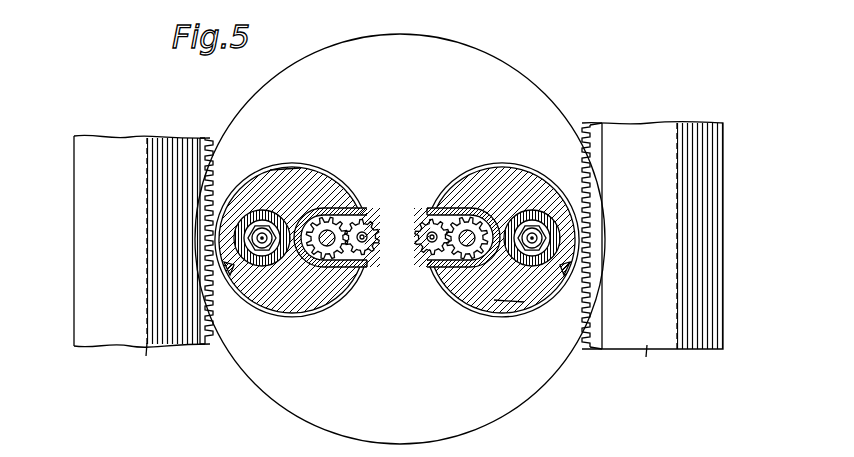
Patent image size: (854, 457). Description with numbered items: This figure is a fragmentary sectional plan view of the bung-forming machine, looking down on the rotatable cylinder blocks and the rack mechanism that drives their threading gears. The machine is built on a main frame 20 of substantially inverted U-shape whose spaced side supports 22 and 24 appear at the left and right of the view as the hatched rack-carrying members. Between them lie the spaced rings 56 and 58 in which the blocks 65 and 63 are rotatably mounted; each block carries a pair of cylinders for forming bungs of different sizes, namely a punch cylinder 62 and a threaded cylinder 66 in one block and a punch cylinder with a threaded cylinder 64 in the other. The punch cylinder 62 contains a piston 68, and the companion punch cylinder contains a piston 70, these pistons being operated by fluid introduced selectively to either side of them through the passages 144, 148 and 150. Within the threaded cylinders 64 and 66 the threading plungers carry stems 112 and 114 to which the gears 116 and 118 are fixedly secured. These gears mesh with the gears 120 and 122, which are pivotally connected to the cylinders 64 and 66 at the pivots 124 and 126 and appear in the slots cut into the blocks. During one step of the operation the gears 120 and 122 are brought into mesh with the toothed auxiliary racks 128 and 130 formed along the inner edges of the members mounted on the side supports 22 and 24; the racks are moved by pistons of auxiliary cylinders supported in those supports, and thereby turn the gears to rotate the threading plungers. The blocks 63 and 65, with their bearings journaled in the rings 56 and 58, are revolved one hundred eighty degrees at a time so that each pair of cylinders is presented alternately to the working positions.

The main frame 20 is at (126, 228).
The side support 22 is at (652, 252).
The side support 24 is at (149, 361).
The ring 56 is at (463, 308).
The ring 58 is at (307, 308).
The punch cylinder 62 is at (251, 218).
The block 63 is at (523, 299).
The threaded cylinder 64 is at (455, 218).
The block 65 is at (288, 165).
The threaded cylinder 66 is at (348, 205).
The piston 68 is at (555, 208).
The piston 70 is at (268, 263).
The stem 112 is at (468, 222).
The stem 114 is at (317, 218).
The gear 116 is at (486, 218).
The gear 118 is at (331, 218).
The gear 120 is at (425, 251).
The gear 122 is at (375, 267).
The pivot 124 is at (430, 230).
The pivot 126 is at (364, 235).
The auxiliary rack 128 is at (590, 178).
The auxiliary rack 130 is at (210, 182).
The passage 144 is at (567, 241).
The passage 148 is at (232, 278).
The passage 150 is at (528, 394).